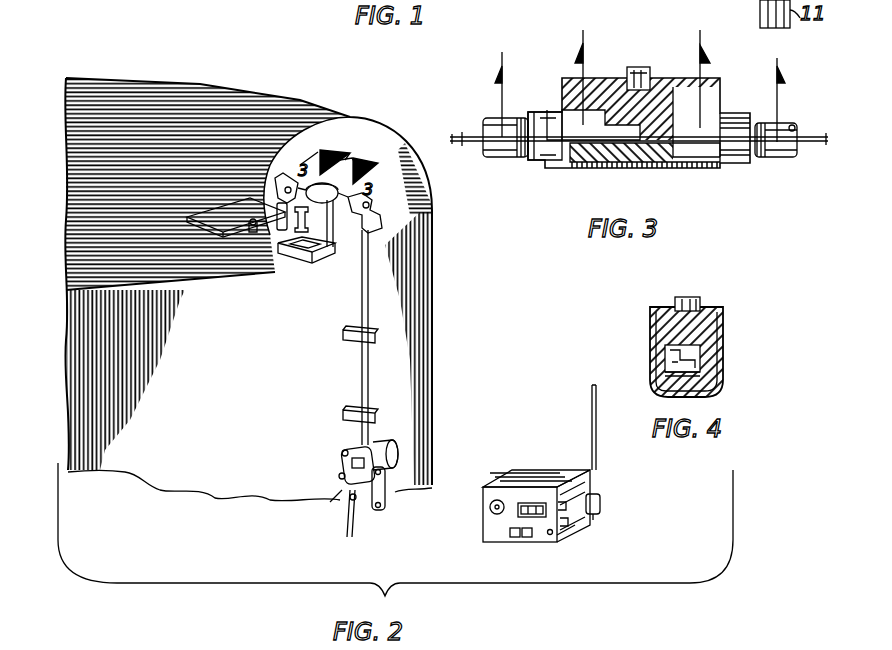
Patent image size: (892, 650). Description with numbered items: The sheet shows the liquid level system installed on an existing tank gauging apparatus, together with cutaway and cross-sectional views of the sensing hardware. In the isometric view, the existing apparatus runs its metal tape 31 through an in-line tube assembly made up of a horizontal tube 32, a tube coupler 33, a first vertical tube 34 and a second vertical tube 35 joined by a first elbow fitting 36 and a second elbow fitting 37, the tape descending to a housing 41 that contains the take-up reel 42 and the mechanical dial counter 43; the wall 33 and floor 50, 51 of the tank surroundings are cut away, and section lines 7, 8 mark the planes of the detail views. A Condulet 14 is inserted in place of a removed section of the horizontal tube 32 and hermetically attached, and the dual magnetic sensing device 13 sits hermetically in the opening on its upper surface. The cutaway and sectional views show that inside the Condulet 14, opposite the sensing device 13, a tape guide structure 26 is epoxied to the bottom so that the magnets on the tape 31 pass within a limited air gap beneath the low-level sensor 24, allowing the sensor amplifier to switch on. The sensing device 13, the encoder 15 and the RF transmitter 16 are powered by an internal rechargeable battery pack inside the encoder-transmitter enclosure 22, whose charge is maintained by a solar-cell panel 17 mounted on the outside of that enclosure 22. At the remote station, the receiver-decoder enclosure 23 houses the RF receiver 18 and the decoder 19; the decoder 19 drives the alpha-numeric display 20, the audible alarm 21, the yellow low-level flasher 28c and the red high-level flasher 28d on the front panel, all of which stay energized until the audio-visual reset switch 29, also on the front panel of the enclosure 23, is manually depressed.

In FIG. 3, the section line 7- 7 is at (639, 96).
In FIG. 3, the section line 8- 8 is at (642, 69).
In FIG. 3, the dual magnetic sensing device 13 is at (570, 80).
In FIG. 4, the dual magnetic sensing device 13 is at (717, 316).
In FIG. 3, the Condulet 14 is at (725, 115).
In FIG. 4, the Condulet 14 is at (650, 396).
In FIG. 2, the encoder 15 is at (402, 286).
In FIG. 2, the RF transmitter 16 is at (402, 286).
In FIG. 2, the solar-cell panel 17 is at (402, 286).
In FIG. 2, the RF receiver 18 is at (650, 452).
In FIG. 2, the decoder 19 is at (650, 452).
In FIG. 2, the alpha-numeric display 20 is at (524, 509).
In FIG. 2, the audible alarm 21 is at (524, 509).
In FIG. 2, the encoder-transmitter enclosure 22 is at (402, 286).
In FIG. 2, the receiver-decoder enclosure 23 is at (533, 503).
In FIG. 3, the low-level sensor 24 is at (650, 178).
In FIG. 3, the tape guide structure 26 is at (670, 170).
In FIG. 4, the tape guide structure 26 is at (710, 385).
In FIG. 2, the low-level flasher 28c is at (568, 505).
In FIG. 2, the high-level flasher 28d is at (570, 522).
In FIG. 2, the audio-visual reset switch 29 is at (557, 538).
In FIG. 3, the metal tape 31 is at (550, 160).
In FIG. 4, the metal tape 31 is at (660, 350).
In FIG. 2, the horizontal tube 32 is at (352, 158).
In FIG. 3, the horizontal tube 32 is at (500, 118).
In FIG. 2, the tube coupler 33 is at (408, 180).
In FIG. 2, the first vertical tube 34 is at (278, 172).
In FIG. 2, the second vertical tube 35 is at (370, 373).
In FIG. 2, the first elbow fitting 36 is at (298, 170).
In FIG. 2, the second elbow fitting 37 is at (400, 237).
In FIG. 2, the housing 41 is at (373, 503).
In FIG. 2, the take-up reel 42 is at (387, 453).
In FIG. 2, the mechanical dial counter 43 is at (347, 478).
In FIG. 2, the floor 50 is at (250, 501).
In FIG. 2, the floor 51 is at (222, 500).